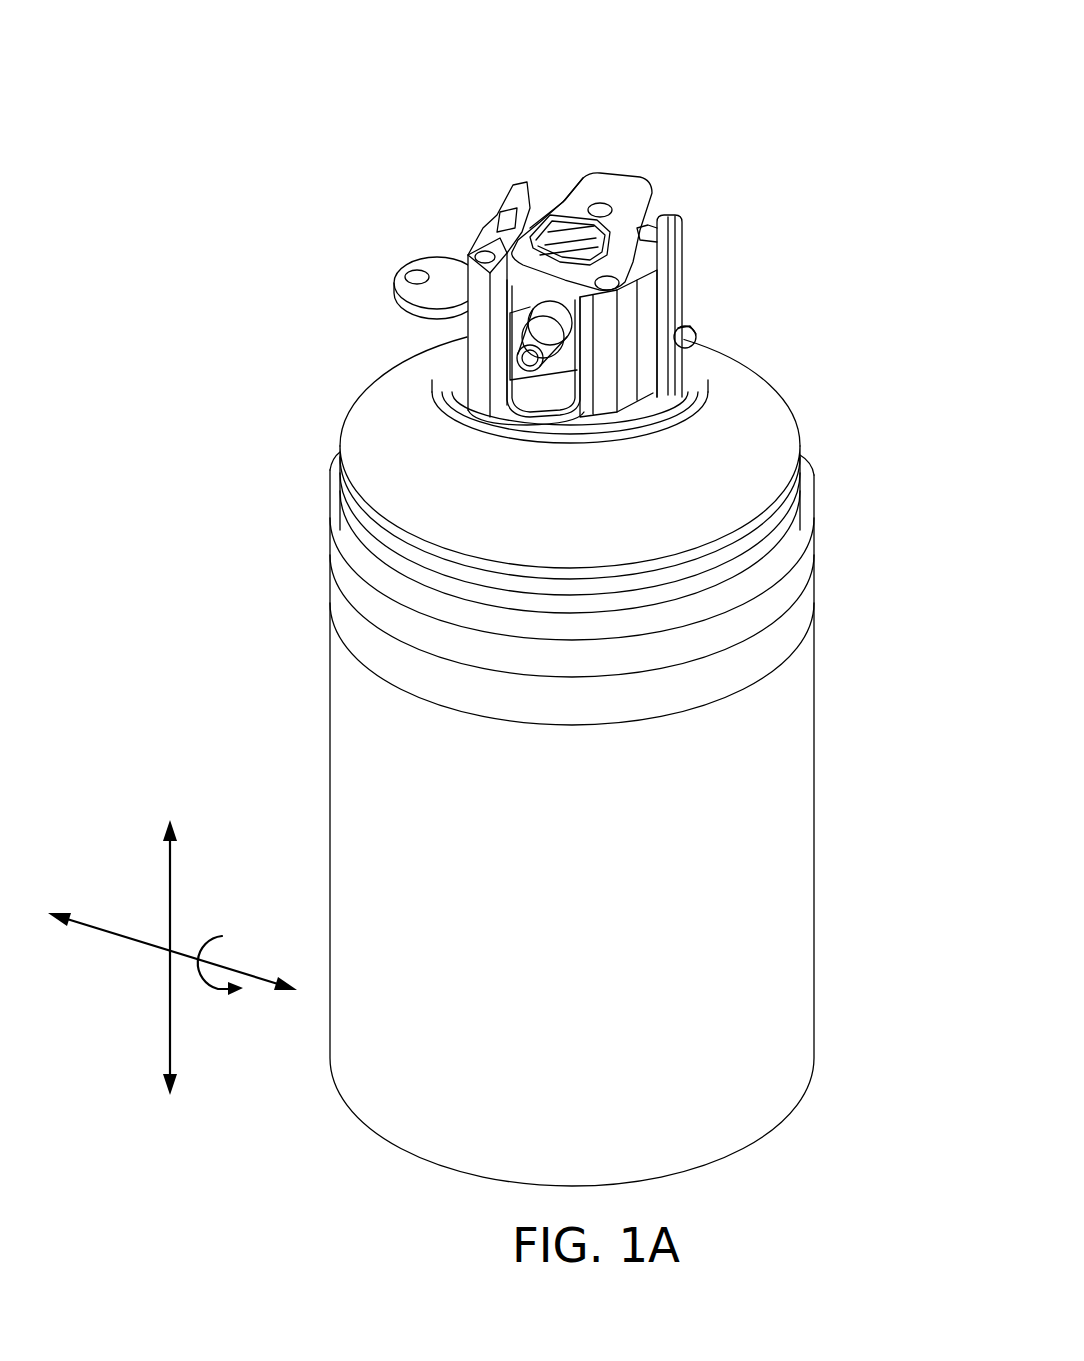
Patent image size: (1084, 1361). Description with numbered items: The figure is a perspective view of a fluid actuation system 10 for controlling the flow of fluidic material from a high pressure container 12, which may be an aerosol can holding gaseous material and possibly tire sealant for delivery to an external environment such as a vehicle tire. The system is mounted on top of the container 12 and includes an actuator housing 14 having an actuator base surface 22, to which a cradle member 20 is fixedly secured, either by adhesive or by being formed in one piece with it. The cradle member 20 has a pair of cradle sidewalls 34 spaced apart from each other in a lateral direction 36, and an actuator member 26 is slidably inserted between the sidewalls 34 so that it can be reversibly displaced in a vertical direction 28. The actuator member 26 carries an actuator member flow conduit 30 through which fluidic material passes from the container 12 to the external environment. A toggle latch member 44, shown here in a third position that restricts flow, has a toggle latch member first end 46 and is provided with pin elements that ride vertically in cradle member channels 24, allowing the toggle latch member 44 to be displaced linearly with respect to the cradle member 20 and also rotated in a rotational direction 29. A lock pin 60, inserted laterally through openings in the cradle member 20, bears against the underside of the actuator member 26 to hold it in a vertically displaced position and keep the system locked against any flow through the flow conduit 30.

The fluid actuation system 10 is at (852, 465).
The high pressure container 12 is at (580, 875).
The actuator housing 14 is at (774, 403).
The cradle member 20 is at (680, 270).
The actuator base surface 22 is at (373, 453).
The cradle member channels 24 is at (493, 232).
The actuator member 26 is at (647, 223).
The vertical direction 28 is at (170, 875).
The rotational direction 29 is at (222, 935).
The actuator member flow conduit 30 is at (525, 340).
The cradle sidewalls 34 is at (663, 302).
The lateral direction 36 is at (118, 938).
The toggle latch member 44 is at (573, 213).
The toggle latch member first end 46 is at (613, 175).
The lock pin 60 is at (405, 260).